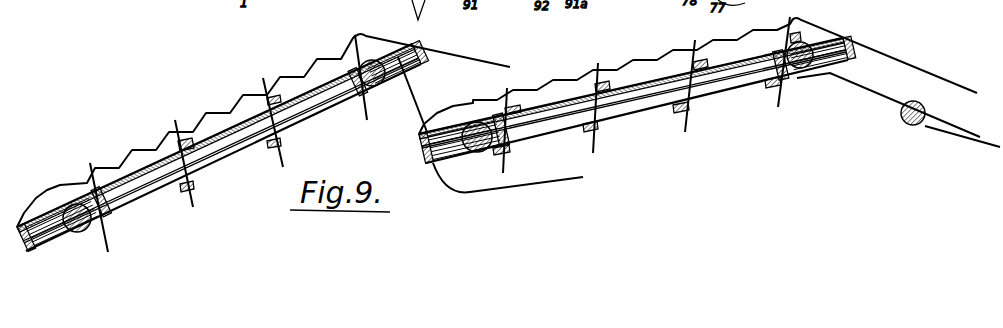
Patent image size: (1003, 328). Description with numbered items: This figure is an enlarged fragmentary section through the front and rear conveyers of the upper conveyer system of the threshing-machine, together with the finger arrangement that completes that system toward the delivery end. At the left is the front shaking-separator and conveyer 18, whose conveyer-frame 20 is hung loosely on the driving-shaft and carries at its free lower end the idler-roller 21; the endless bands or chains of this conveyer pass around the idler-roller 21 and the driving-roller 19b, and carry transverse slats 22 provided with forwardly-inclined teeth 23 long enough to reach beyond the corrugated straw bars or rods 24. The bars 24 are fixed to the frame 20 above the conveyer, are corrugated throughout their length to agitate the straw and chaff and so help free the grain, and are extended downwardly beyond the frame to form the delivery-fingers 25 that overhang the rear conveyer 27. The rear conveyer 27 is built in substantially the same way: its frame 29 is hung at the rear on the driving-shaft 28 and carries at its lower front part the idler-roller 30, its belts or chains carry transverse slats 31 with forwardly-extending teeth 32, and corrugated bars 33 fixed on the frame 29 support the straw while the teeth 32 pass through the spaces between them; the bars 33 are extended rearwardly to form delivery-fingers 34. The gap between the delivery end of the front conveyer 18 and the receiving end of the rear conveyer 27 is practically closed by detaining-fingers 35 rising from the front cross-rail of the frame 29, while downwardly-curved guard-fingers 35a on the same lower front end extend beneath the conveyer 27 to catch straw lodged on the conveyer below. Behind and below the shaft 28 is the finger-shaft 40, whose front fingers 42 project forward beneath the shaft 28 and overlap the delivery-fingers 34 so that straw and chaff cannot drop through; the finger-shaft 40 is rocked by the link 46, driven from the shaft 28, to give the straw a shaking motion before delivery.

The front conveyer 18 is at (223, 146).
The conveyer-frame 20 is at (219, 147).
The idler-roller 21 is at (78, 207).
The transverse slats 22 is at (104, 222).
The forwardly-inclined teeth 23 is at (273, 157).
The corrugated straw bars or rods 24 is at (227, 99).
The delivery-fingers 25 is at (497, 59).
The driving-roller 19b is at (372, 87).
The detaining-fingers 35 is at (417, 108).
The idler-roller 30 is at (477, 122).
The corrugated bars 33 is at (566, 85).
The guard-fingers 35a is at (530, 186).
The rear conveyer 27 is at (637, 99).
The frame 29 is at (633, 100).
The transverse slats 31 is at (597, 127).
The teeth 32 is at (738, 109).
The driving-shaft 28 is at (803, 67).
The fingers 42 is at (868, 89).
The delivery-fingers 34 is at (937, 72).
The finger-shaft 40 is at (905, 122).
The link 46 is at (997, 137).